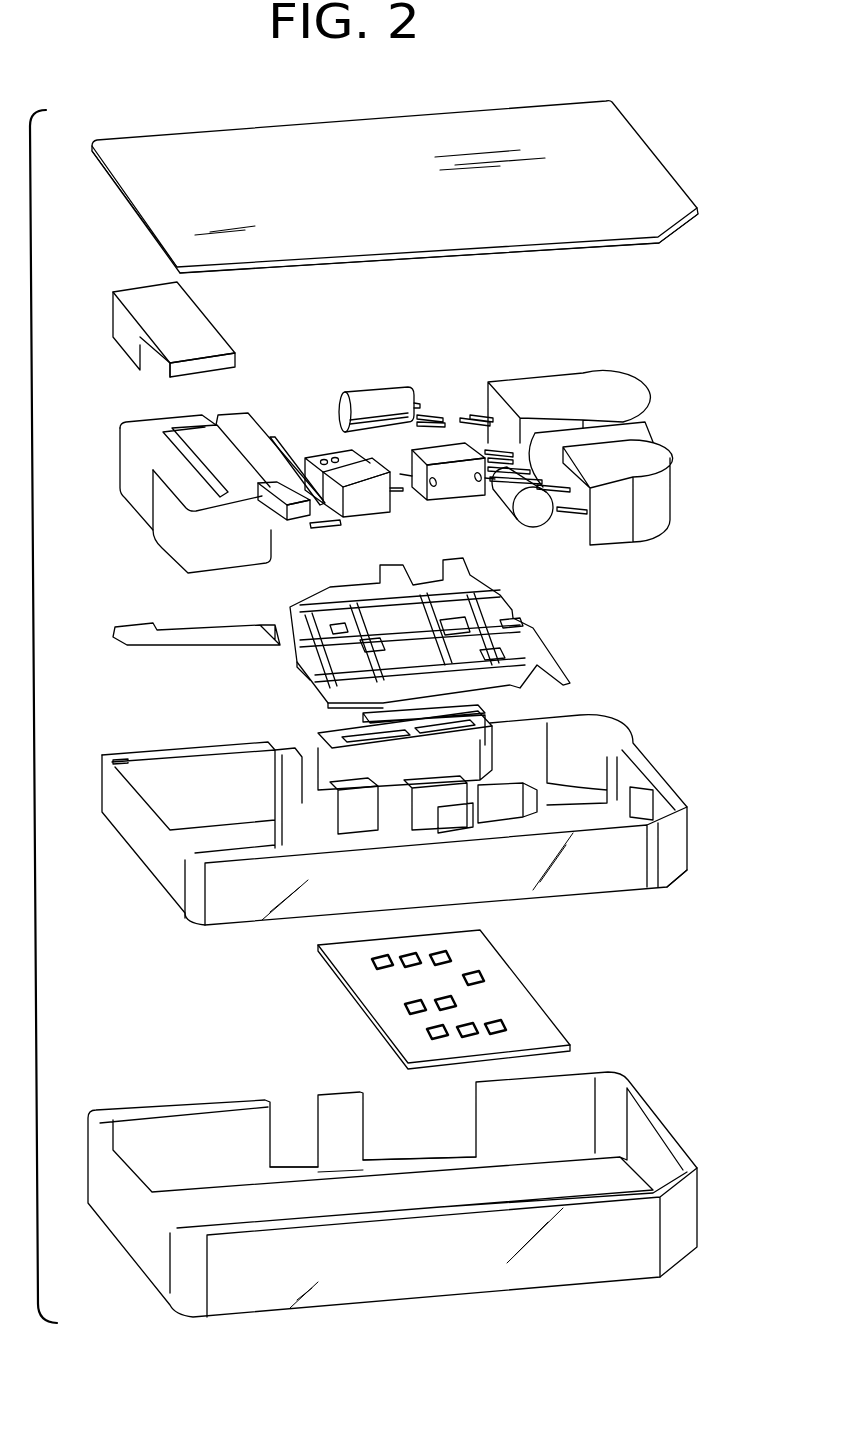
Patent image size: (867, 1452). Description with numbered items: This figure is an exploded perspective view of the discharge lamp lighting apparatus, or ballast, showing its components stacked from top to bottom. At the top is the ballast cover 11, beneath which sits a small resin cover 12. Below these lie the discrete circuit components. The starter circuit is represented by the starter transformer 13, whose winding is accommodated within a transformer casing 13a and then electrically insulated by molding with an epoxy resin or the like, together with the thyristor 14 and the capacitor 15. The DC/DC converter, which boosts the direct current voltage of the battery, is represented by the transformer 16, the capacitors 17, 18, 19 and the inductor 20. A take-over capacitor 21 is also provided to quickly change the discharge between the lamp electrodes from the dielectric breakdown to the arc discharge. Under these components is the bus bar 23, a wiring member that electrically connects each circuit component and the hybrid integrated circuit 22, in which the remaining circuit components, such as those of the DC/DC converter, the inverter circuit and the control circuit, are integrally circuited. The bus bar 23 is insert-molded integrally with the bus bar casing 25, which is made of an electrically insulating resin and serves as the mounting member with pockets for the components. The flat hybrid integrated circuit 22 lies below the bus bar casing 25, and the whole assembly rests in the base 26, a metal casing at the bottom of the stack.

The ballast cover 11 is at (670, 170).
The resin cover 12 is at (215, 317).
The starter transformer 13 is at (158, 552).
The transformer casing 13a is at (305, 545).
The thyristor 14 is at (318, 475).
The capacitor 15 is at (377, 513).
The transformer 16 is at (588, 376).
The capacitor 17 is at (387, 388).
The capacitor 18 is at (460, 488).
The capacitor 19 is at (647, 437).
The inductor 20 is at (662, 507).
The take-over capacitor 21 is at (538, 515).
The hybrid integrated circuit (HIC) 22 is at (533, 988).
The bus bar 23 is at (540, 623).
The bus bar casing 25 is at (630, 730).
The base 26 is at (667, 1122).